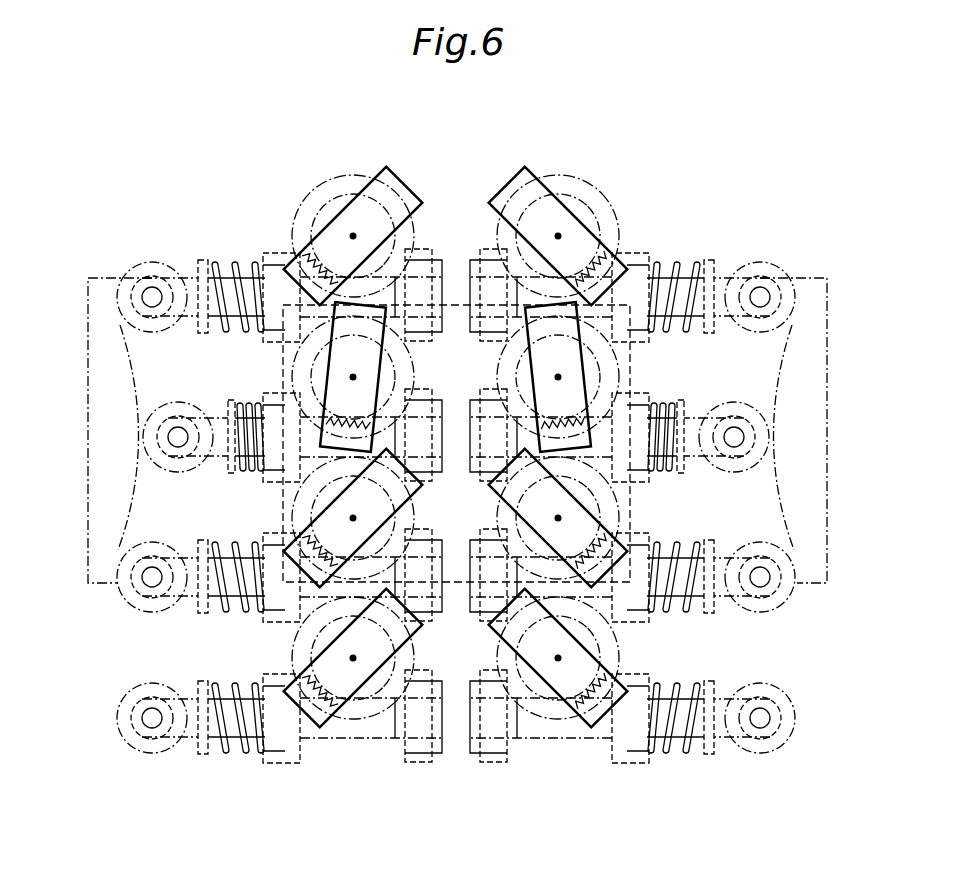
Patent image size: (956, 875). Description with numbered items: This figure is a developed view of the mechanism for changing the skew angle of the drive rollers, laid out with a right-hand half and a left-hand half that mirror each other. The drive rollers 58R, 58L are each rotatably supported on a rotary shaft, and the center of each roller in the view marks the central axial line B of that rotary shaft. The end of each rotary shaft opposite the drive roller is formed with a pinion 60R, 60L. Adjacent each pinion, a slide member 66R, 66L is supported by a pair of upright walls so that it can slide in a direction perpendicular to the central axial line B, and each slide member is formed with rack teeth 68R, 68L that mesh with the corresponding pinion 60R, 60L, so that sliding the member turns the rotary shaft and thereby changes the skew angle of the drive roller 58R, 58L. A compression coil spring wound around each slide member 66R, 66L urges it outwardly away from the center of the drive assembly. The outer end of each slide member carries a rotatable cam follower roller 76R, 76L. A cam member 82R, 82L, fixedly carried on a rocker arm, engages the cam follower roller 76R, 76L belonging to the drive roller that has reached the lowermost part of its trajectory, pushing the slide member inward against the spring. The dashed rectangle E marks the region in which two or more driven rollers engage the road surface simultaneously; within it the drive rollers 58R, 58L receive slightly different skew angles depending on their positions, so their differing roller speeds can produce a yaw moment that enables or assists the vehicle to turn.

The drive roller 58R is at (395, 180).
The drive roller 58L is at (531, 180).
The cam follower roller 76R is at (150, 262).
The cam follower roller 76L is at (762, 262).
The cam member 82R is at (86, 462).
The cam member 82L is at (800, 585).
The slide member 66R is at (280, 740).
The slide member 66L is at (632, 740).
The rack teeth 68R is at (380, 706).
The rack teeth 68L is at (532, 706).
The pinion 60R is at (405, 690).
The pinion 60L is at (507, 690).
The central axial line B is at (353, 236).
The region E is at (635, 382).